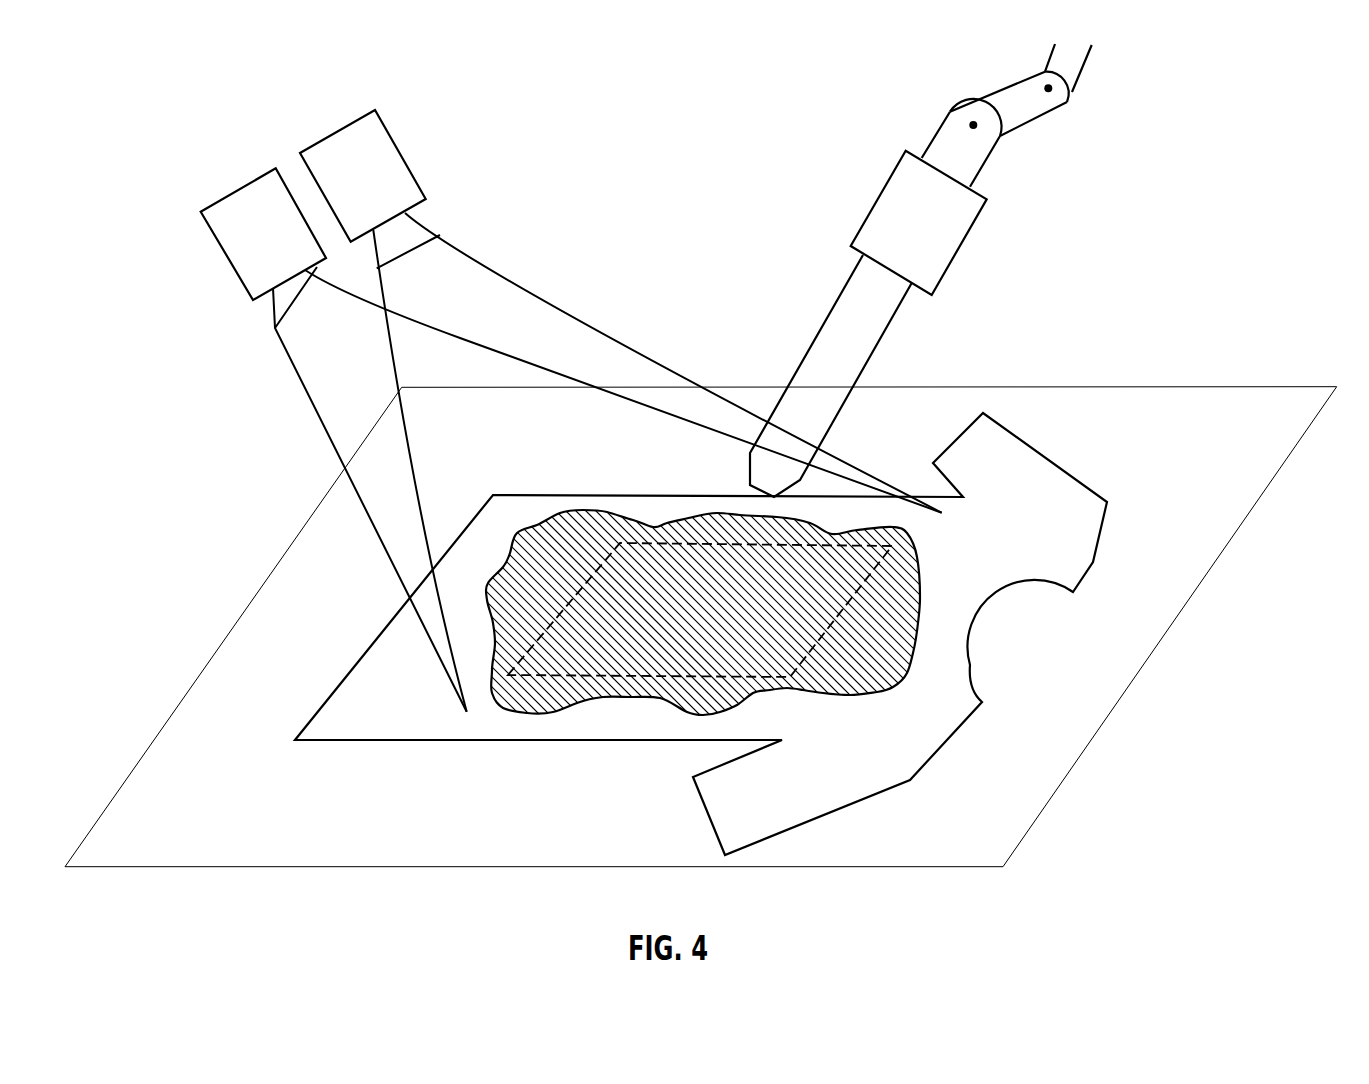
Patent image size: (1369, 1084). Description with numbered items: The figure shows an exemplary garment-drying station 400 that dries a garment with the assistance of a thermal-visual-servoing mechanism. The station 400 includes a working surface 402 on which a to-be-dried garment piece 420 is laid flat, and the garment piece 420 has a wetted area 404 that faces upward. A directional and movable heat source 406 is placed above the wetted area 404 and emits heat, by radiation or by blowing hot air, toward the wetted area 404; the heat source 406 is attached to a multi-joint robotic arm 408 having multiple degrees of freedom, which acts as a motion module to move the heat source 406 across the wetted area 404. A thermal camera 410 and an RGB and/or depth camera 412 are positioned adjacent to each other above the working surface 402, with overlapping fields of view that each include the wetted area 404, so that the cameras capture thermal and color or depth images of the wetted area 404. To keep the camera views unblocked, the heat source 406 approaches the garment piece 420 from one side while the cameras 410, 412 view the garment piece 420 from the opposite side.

The garment-drying station 400 is at (162, 316).
The working surface 402 is at (1178, 402).
The wetted area 404 is at (917, 591).
The directional and movable heat source 406 is at (862, 222).
The multi-joint robotic arm 408 is at (1022, 108).
The thermal camera 410 is at (237, 220).
The RGB and/or depth camera 412 is at (348, 178).
The garment piece 420 is at (393, 742).